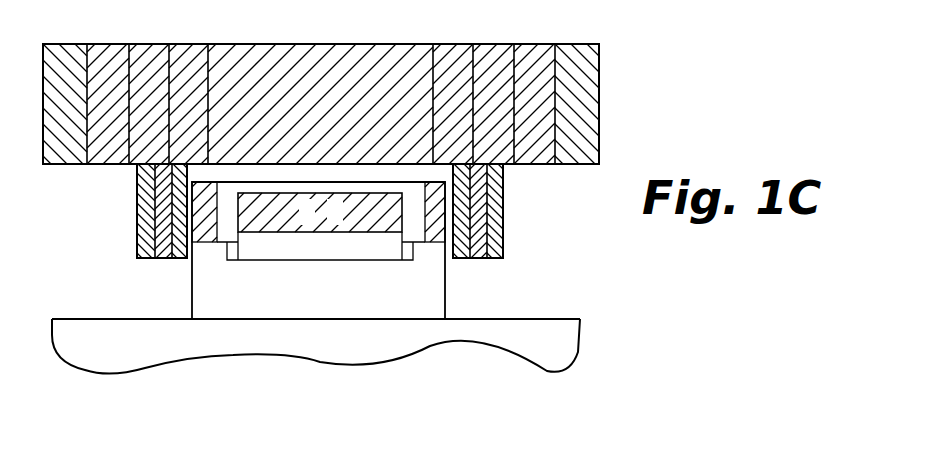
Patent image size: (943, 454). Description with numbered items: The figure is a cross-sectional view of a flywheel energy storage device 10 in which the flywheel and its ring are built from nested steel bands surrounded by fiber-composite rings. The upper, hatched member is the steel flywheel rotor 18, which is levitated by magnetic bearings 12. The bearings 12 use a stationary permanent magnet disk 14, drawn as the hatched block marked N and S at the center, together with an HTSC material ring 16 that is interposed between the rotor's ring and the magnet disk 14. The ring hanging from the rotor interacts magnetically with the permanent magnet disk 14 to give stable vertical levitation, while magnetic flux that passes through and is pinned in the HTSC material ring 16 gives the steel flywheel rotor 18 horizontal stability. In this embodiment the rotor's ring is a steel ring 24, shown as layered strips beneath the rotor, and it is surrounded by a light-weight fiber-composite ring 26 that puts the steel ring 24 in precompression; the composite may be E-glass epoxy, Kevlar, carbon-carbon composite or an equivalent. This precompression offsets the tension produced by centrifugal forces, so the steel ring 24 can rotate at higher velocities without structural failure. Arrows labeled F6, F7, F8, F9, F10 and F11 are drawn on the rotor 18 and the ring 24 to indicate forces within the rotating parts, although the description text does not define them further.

The flywheel energy storage device 10 is at (636, 68).
The magnetic bearing 12 is at (506, 187).
The permanent magnet disk 14 is at (382, 220).
The HTSC material ring 16 is at (437, 221).
The steel flywheel rotor 18 is at (92, 165).
The steel ring 24 is at (143, 233).
The fiber-composite ring 26 is at (145, 258).
The force F6 is at (153, 187).
The force F7 is at (168, 207).
The force F8 is at (84, 93).
The force F9 is at (121, 108).
The force F10 is at (163, 93).
The force F11 is at (204, 108).